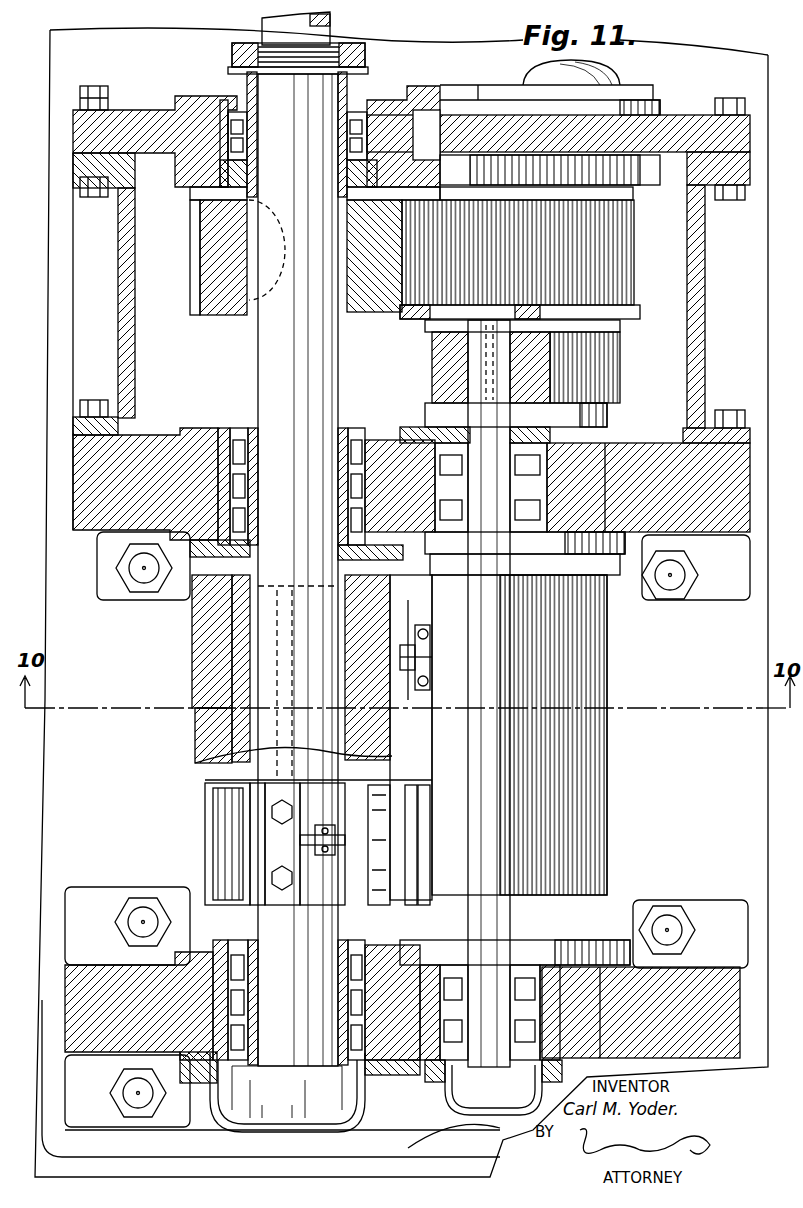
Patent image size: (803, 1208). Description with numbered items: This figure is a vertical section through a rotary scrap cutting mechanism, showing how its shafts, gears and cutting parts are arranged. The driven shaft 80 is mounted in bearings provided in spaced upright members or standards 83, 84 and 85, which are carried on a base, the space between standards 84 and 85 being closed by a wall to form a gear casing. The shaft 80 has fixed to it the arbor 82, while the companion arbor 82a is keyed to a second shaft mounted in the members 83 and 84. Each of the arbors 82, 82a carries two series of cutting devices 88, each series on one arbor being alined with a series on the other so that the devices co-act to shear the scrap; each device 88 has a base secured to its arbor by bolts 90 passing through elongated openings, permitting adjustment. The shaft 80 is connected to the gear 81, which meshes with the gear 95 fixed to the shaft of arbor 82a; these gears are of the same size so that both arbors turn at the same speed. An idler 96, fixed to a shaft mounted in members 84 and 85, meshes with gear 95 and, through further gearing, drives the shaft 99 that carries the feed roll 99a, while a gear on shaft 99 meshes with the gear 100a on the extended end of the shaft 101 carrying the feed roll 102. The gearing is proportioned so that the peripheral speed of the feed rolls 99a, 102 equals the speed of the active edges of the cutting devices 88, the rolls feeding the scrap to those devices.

The driven shaft 80 is at (262, 80).
The gear 81 is at (217, 312).
The arbor 82 is at (204, 740).
The arbor 82a is at (415, 762).
The upright member 83 is at (70, 1000).
The upright member 84 is at (73, 470).
The upright member 85 is at (80, 136).
The cutting device 88 is at (250, 815).
The bolt 90 is at (284, 824).
The gear 95 is at (406, 325).
The idler 96 is at (634, 284).
The shaft 99 is at (580, 418).
The feed roll 99a is at (600, 668).
The gear 100a is at (432, 365).
The shaft 101 is at (482, 515).
The feed roll 102 is at (438, 728).